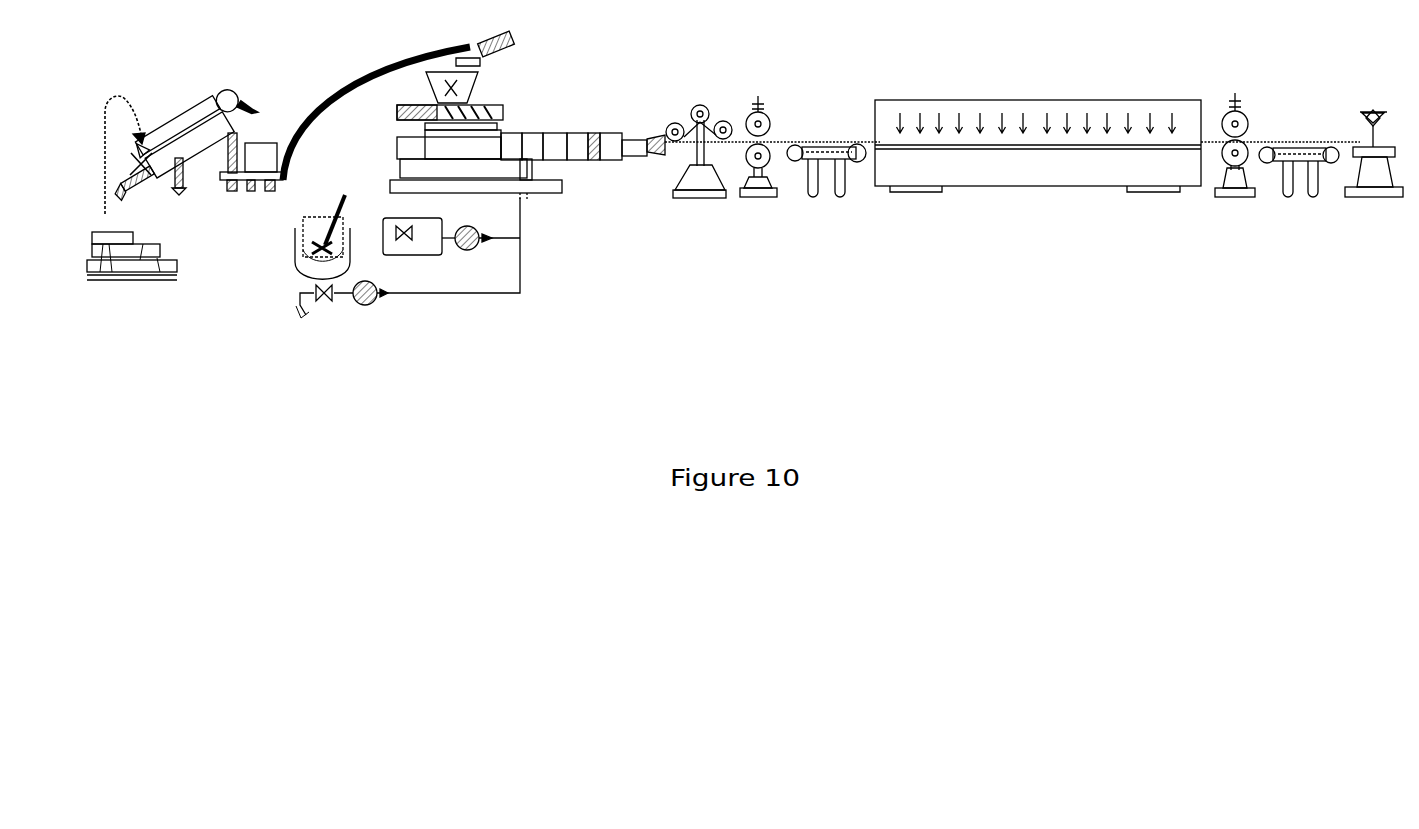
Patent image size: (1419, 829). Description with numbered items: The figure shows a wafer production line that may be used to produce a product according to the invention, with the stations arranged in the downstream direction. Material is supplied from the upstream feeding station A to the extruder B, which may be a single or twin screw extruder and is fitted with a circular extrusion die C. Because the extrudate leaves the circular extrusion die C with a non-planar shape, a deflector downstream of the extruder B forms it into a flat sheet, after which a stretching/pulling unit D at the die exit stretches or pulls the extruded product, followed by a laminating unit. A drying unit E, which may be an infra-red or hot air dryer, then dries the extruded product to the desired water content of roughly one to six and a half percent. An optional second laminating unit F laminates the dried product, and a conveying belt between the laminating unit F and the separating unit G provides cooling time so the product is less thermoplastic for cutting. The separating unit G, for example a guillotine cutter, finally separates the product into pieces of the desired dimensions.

The feeding station A is at (185, 179).
The extruder B is at (474, 174).
The circular extrusion die C is at (737, 104).
The stretching/pulling unit D is at (766, 180).
The drying unit E is at (1038, 181).
The laminating unit F is at (1280, 178).
The separating unit G is at (1374, 186).